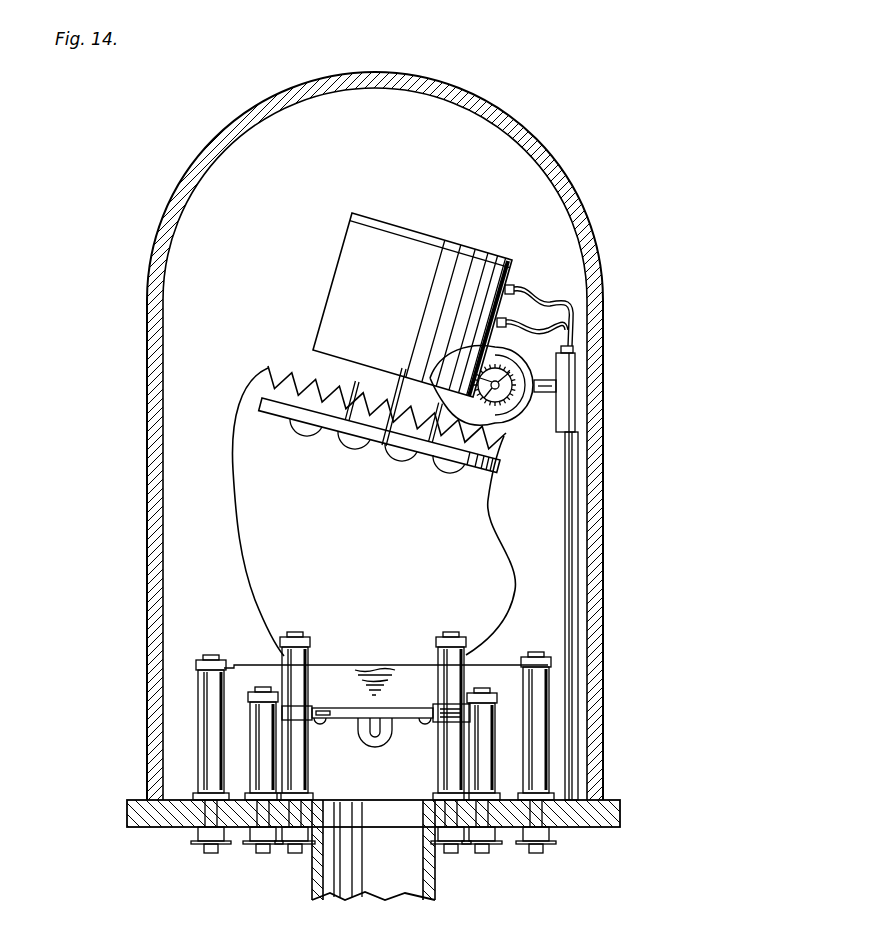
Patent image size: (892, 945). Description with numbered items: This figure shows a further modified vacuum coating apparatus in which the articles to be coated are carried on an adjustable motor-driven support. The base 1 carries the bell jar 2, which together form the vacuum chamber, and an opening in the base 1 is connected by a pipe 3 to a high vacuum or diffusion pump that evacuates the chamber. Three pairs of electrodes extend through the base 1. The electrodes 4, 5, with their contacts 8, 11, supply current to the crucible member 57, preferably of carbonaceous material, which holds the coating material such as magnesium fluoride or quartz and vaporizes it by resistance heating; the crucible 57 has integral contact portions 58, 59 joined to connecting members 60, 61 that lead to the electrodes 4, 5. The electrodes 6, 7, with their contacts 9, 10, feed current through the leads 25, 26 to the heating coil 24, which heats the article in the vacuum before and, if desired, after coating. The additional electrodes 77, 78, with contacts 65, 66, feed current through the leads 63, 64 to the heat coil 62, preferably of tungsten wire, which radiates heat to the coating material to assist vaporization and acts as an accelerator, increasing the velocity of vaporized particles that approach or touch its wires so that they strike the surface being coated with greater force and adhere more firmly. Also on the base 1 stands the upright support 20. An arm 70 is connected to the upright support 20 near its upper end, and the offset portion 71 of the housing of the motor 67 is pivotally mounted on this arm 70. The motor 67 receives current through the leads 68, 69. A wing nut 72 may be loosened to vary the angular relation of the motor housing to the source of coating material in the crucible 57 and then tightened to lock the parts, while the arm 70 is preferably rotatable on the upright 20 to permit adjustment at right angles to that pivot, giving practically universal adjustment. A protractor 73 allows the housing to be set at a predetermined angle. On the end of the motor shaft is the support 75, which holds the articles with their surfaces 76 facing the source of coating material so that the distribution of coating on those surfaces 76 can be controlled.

The base 1 is at (621, 810).
The bell jar 2 is at (604, 687).
The pipe 3 is at (437, 898).
The electrode 4 is at (250, 742).
The electrode 5 is at (495, 747).
The electrode 6 is at (308, 674).
The electrode 7 is at (465, 681).
The contact 8 is at (262, 853).
The contact 9 is at (292, 853).
The contact 10 is at (450, 853).
The contact 11 is at (486, 853).
The upright support 20 is at (557, 488).
The heating coil 24 is at (290, 366).
The lead 25 is at (236, 526).
The lead 26 is at (488, 516).
The crucible member 57 is at (378, 742).
The integral contact portion 58 is at (344, 720).
The integral contact portion 59 is at (412, 720).
The connecting member 60 is at (322, 708).
The connecting member 61 is at (440, 706).
The heat coil 62 is at (386, 668).
The lead 63 is at (330, 664).
The lead 64 is at (512, 655).
The contact 65 is at (208, 853).
The contact 66 is at (540, 853).
The motor 67 is at (334, 278).
The lead 68 is at (548, 302).
The lead 69 is at (524, 338).
The arm 70 is at (538, 395).
The offset portion 71 is at (510, 422).
The wing nut 72 is at (476, 396).
The protractor 73 is at (432, 362).
The support 75 is at (300, 420).
The surface 76 is at (360, 452).
The electrode 77 is at (198, 688).
The electrode 78 is at (524, 697).